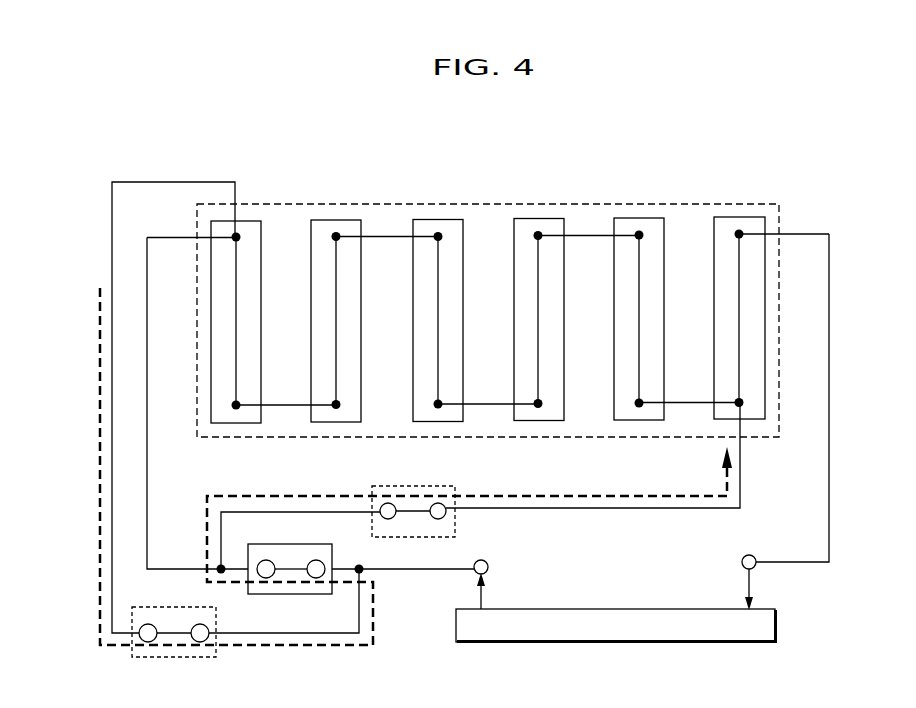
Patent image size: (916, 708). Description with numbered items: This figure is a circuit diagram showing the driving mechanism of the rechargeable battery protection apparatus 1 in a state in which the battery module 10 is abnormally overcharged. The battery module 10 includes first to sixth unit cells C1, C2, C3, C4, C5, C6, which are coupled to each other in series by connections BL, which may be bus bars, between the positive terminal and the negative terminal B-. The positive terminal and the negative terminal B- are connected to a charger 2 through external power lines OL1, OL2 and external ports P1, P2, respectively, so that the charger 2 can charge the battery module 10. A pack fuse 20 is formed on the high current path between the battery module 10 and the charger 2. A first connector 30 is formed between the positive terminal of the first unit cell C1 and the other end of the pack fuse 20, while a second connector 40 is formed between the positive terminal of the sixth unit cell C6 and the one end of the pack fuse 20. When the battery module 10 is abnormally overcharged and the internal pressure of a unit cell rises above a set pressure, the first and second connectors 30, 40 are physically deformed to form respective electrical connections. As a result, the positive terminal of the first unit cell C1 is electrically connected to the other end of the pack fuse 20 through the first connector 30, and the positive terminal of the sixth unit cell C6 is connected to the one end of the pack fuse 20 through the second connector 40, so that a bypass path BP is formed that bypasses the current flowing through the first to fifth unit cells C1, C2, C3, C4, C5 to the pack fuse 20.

The rechargeable battery protection apparatus 1 is at (805, 147).
The battery module 10 is at (779, 317).
The charger 2 is at (776, 625).
The pack fuse 20 is at (290, 544).
The first connector 30 is at (175, 657).
The second connector 40 is at (420, 486).
The first unit cell C1 is at (253, 221).
The second unit cell C2 is at (332, 220).
The third unit cell C3 is at (433, 220).
The fourth unit cell C4 is at (534, 218).
The fifth unit cell C5 is at (635, 218).
The sixth unit cell C6 is at (736, 217).
The negative terminal B- is at (784, 252).
The connection BL is at (286, 405).
The bypass path BP is at (99, 398).
The external power line OL1 is at (149, 471).
The external power line OL2 is at (829, 508).
The external port P1 is at (486, 561).
The external port P2 is at (754, 556).